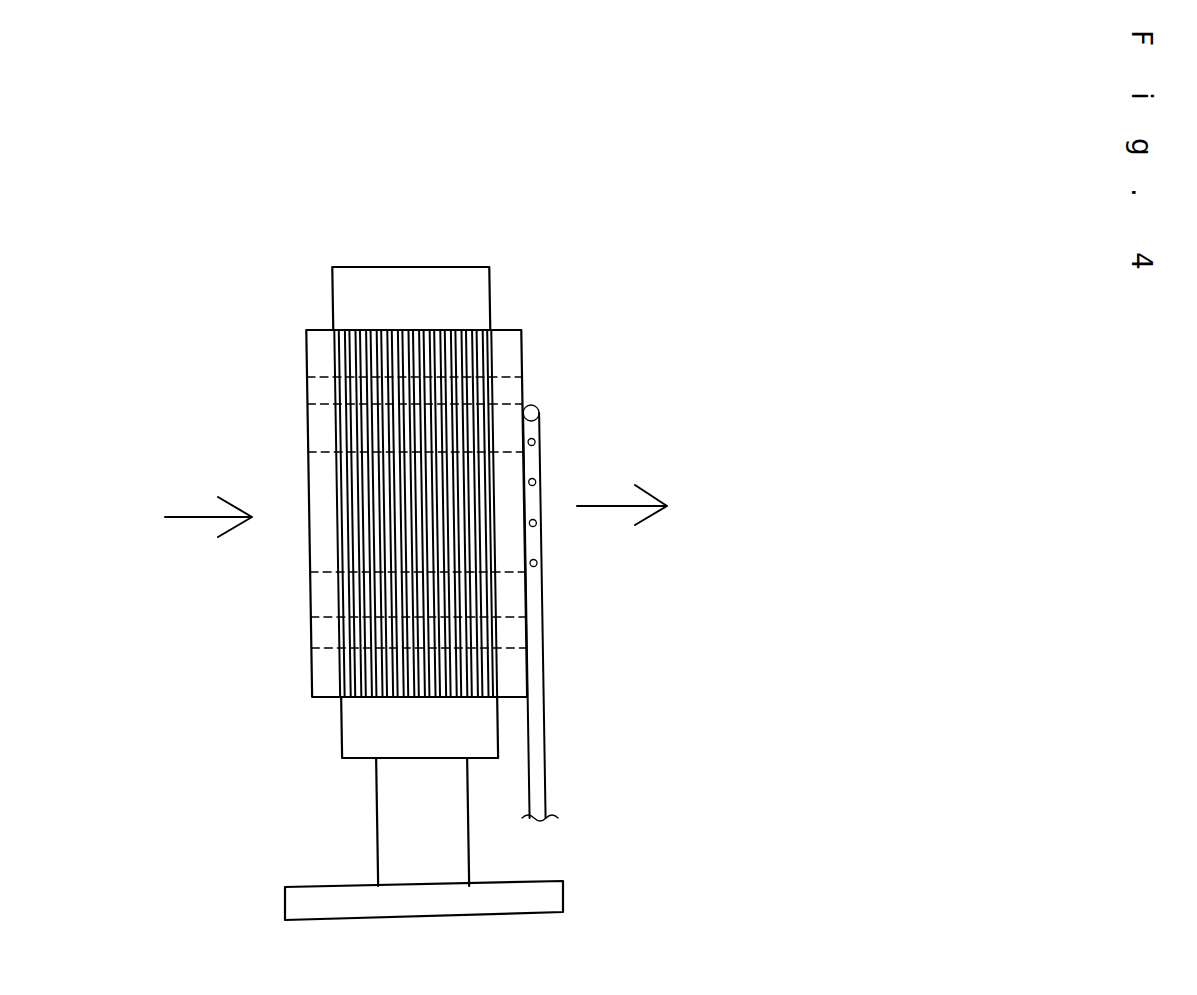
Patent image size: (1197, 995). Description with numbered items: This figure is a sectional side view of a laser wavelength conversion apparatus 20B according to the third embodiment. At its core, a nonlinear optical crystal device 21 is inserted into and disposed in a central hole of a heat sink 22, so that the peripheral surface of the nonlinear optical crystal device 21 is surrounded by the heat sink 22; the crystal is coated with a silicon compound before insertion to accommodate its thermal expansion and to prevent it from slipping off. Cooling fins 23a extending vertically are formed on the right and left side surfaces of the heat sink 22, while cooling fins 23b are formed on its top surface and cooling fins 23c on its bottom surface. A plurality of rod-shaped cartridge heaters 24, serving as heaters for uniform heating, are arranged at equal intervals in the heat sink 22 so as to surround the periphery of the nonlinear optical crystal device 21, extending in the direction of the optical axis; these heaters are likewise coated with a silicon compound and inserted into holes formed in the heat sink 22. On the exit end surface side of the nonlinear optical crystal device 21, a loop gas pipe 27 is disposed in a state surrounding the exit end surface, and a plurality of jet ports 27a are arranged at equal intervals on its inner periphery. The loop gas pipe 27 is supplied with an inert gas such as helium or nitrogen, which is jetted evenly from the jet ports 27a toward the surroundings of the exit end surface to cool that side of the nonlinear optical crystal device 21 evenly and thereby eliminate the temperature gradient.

The laser wavelength conversion apparatus 20B is at (451, 243).
The nonlinear optical crystal device 21 is at (483, 483).
The heat sink 22 is at (508, 350).
The cooling fins 23a is at (443, 637).
The cooling fins 23b is at (468, 290).
The cooling fins 23c is at (481, 725).
The cartridge heaters 24 is at (316, 392).
The loop gas pipe 27 is at (537, 590).
The jet ports 27a is at (532, 527).